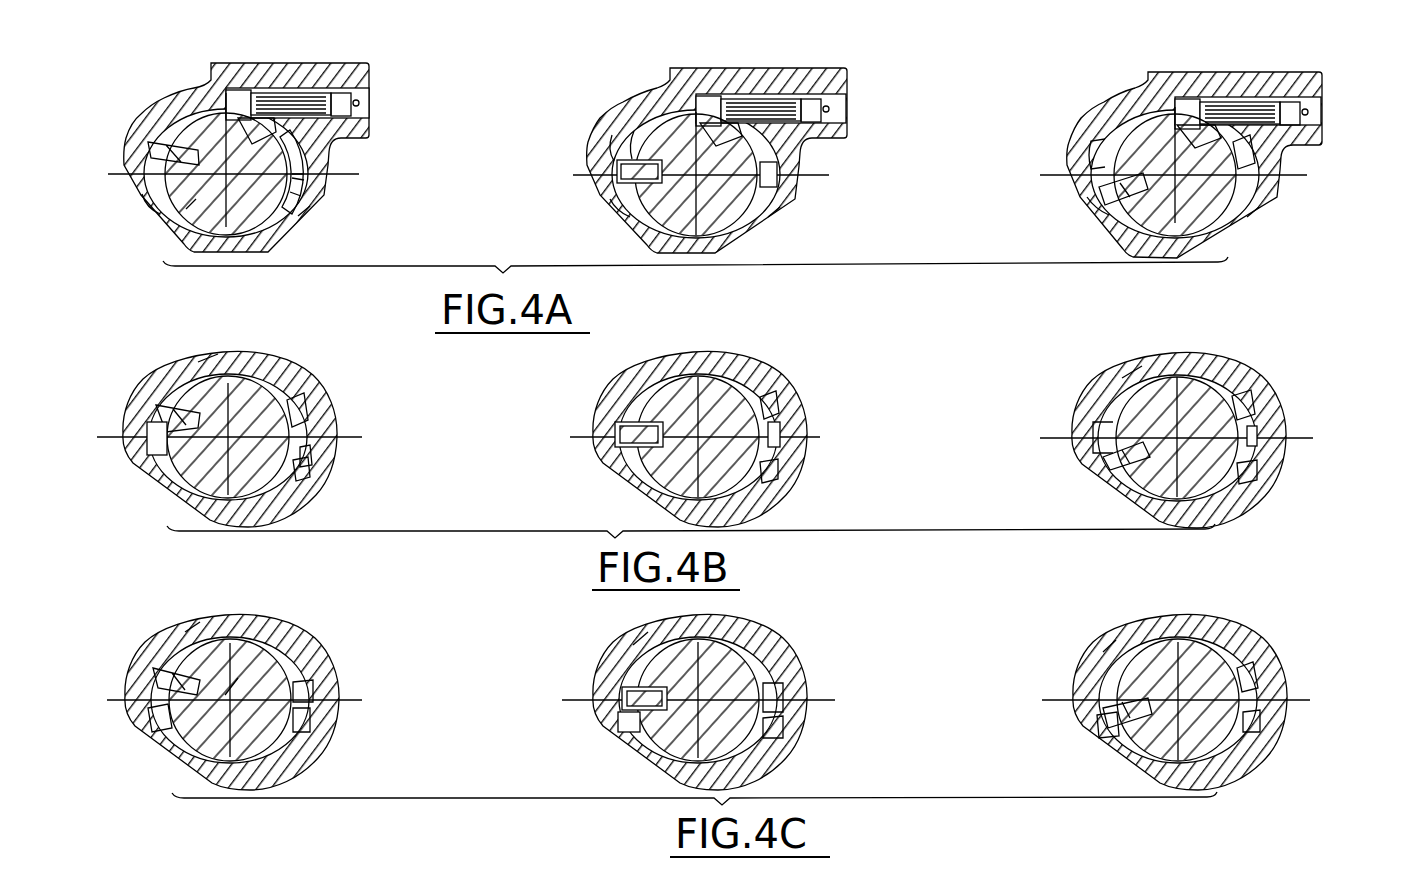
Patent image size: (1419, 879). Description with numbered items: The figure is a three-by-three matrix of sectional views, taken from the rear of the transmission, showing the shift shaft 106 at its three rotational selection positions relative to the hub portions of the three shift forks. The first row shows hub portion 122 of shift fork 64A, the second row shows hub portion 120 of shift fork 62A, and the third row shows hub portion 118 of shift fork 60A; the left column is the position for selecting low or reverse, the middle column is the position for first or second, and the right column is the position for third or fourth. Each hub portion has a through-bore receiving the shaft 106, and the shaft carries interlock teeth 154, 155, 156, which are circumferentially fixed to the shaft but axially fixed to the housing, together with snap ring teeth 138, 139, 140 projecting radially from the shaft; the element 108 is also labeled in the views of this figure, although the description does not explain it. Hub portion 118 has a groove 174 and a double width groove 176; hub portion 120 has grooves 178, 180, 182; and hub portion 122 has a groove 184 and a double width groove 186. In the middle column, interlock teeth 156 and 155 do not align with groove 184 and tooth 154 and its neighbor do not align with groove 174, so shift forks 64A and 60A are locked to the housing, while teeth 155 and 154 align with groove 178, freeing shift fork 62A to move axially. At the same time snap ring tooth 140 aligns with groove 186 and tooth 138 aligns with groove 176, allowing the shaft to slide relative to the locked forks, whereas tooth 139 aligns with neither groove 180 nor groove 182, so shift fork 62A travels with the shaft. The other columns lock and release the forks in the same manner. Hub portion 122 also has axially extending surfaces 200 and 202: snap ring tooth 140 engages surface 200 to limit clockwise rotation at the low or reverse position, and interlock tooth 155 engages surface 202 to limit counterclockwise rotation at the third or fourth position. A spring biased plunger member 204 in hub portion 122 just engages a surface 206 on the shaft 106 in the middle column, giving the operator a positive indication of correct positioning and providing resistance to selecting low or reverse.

In FIG. 4C, the shift fork 60A is at (320, 673).
In FIG. 4B, the shift fork 62A is at (290, 385).
In FIG. 4A, the shift fork 64A is at (360, 128).
In FIG. 4A, the shaft 106 is at (250, 213).
In FIG. 4B, the shaft 106 is at (250, 480).
In FIG. 4C, the shaft 106 is at (262, 680).
In FIG. 4A, the ball slot 108 is at (192, 205).
In FIG. 4B, the ball slot 108 is at (187, 467).
In FIG. 4C, the ball slot 108 is at (247, 675).
In FIG. 4C, the hub portion 118 is at (195, 633).
In FIG. 4B, the hub portion 120 is at (233, 353).
In FIG. 4A, the hub portion 122 is at (175, 105).
In FIG. 4C, the snap ring tooth 138 is at (313, 720).
In FIG. 4B, the snap ring tooth 139 is at (310, 455).
In FIG. 4A, the snap ring tooth 140 is at (300, 193).
In FIG. 4C, the interlock tooth 154 is at (160, 672).
In FIG. 4B, the interlock tooth 155 is at (170, 407).
In FIG. 4A, the interlock tooth 156 is at (165, 148).
In FIG. 4C, the groove 174 is at (162, 722).
In FIG. 4C, the double width groove 176 is at (303, 693).
In FIG. 4B, the groove 178 is at (1095, 430).
In FIG. 4B, the groove 180 is at (295, 417).
In FIG. 4B, the groove 182 is at (310, 477).
In FIG. 4A, the groove 184 is at (613, 143).
In FIG. 4A, the double width groove 186 is at (300, 163).
In FIG. 4A, the axially extending surface 200 is at (307, 207).
In FIG. 4A, the axially extending surface 202 is at (158, 203).
In FIG. 4A, the spring biased plunger member 204 is at (277, 100).
In FIG. 4A, the surface 206 is at (323, 97).